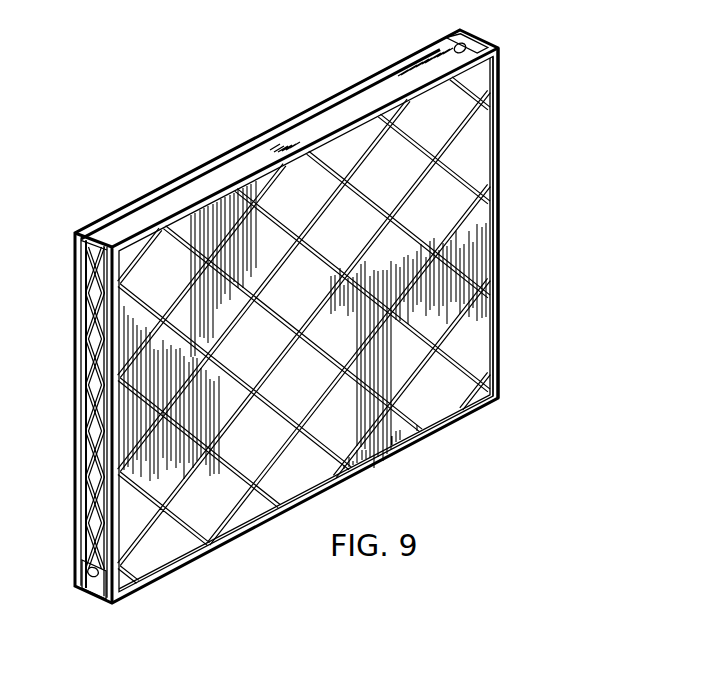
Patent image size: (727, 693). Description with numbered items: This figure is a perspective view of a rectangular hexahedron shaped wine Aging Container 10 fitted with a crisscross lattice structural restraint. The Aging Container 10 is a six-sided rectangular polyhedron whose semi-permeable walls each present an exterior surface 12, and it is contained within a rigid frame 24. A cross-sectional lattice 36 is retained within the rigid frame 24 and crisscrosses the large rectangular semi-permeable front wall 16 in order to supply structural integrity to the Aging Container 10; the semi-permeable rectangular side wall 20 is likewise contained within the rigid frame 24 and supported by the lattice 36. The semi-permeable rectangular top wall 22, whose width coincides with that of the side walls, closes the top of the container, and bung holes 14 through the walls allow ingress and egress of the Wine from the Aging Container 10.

The Aging Container 10 is at (597, 43).
The exterior surface 12 is at (345, 130).
The bung hole 14 is at (468, 44).
The front wall 16 is at (490, 166).
The side wall 20 is at (77, 407).
The top wall 22 is at (391, 82).
The rigid frame 24 is at (498, 215).
The cross-sectional lattice 36 is at (489, 183).